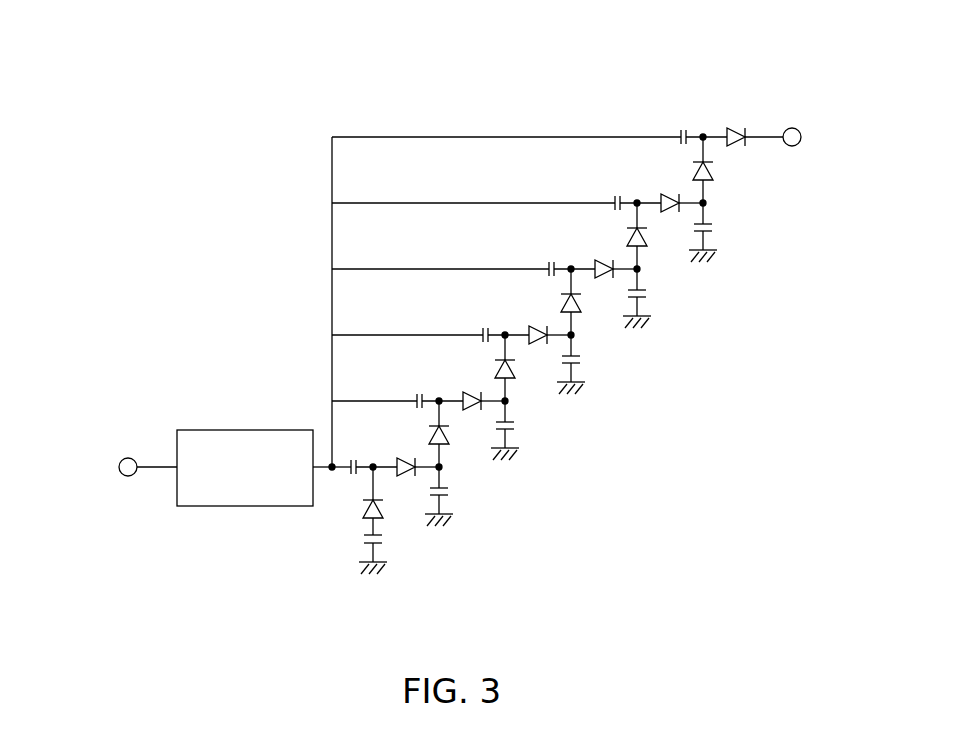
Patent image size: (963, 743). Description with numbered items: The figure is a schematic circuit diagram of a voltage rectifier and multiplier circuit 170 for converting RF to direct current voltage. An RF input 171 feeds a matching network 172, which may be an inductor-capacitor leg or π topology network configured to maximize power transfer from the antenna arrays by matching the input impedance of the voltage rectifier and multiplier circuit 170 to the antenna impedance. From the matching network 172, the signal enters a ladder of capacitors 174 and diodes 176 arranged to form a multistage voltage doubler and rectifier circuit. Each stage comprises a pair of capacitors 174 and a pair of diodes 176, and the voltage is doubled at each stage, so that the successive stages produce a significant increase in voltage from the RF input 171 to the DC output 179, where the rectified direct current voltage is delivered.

The voltage rectifier and multiplier circuit 170 is at (176, 121).
The RF input 171 is at (118, 467).
The matching network 172 is at (243, 430).
The capacitors 174 is at (400, 555).
The diodes 176 is at (363, 518).
The DC output 179 is at (802, 137).